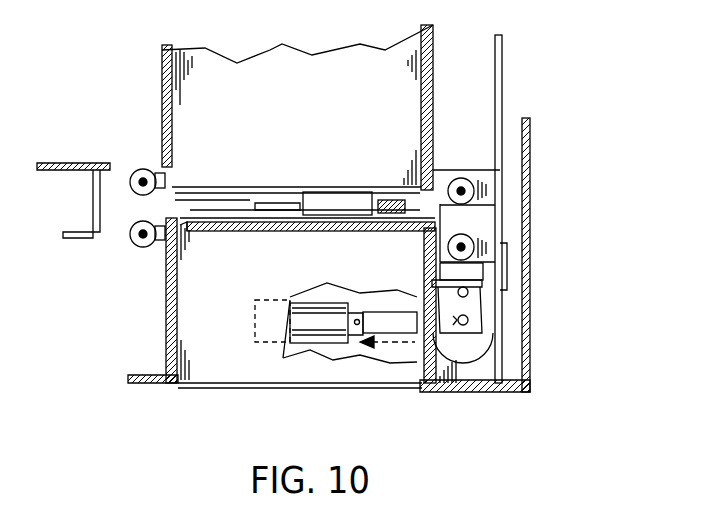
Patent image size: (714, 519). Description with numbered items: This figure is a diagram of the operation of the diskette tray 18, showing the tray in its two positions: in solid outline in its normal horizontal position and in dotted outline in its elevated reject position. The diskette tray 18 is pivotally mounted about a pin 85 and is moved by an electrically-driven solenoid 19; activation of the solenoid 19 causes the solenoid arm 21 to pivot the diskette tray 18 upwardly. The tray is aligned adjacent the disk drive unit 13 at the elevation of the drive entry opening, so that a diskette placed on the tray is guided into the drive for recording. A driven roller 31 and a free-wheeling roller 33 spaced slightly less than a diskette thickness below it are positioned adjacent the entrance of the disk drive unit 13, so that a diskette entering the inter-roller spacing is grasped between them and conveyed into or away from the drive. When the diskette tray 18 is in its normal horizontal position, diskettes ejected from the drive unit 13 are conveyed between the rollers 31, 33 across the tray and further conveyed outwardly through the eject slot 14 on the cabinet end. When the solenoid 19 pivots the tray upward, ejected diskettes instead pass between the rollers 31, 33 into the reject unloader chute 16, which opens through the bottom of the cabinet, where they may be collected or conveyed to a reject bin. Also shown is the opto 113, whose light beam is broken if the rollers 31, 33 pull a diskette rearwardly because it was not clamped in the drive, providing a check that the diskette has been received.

The disk drive unit 13 is at (108, 167).
The eject slot 14 is at (528, 213).
The reject unloader chute 16 is at (228, 331).
The diskette tray 18 is at (230, 190).
The solenoid 19 is at (313, 312).
The solenoid arm 21 is at (388, 313).
The roller 31 is at (143, 168).
The free-wheeling roller 33 is at (128, 225).
The pin 85 is at (465, 292).
The opto 113 is at (163, 307).